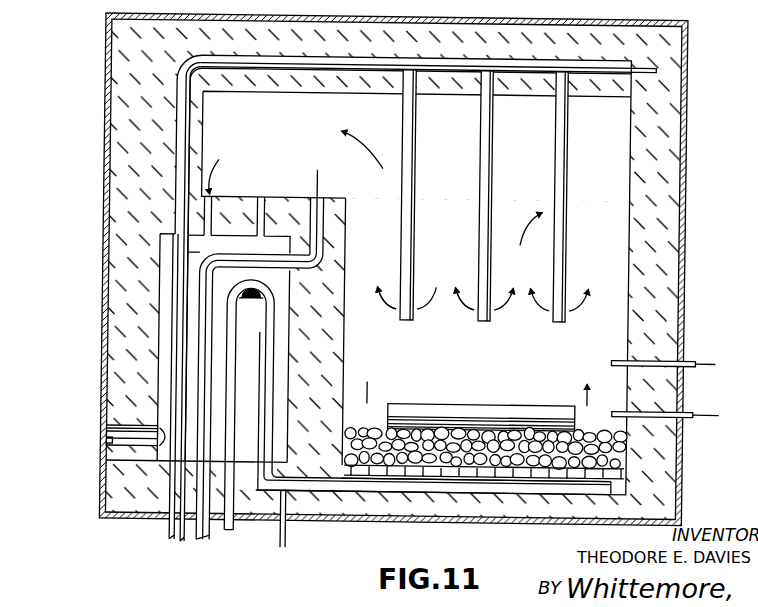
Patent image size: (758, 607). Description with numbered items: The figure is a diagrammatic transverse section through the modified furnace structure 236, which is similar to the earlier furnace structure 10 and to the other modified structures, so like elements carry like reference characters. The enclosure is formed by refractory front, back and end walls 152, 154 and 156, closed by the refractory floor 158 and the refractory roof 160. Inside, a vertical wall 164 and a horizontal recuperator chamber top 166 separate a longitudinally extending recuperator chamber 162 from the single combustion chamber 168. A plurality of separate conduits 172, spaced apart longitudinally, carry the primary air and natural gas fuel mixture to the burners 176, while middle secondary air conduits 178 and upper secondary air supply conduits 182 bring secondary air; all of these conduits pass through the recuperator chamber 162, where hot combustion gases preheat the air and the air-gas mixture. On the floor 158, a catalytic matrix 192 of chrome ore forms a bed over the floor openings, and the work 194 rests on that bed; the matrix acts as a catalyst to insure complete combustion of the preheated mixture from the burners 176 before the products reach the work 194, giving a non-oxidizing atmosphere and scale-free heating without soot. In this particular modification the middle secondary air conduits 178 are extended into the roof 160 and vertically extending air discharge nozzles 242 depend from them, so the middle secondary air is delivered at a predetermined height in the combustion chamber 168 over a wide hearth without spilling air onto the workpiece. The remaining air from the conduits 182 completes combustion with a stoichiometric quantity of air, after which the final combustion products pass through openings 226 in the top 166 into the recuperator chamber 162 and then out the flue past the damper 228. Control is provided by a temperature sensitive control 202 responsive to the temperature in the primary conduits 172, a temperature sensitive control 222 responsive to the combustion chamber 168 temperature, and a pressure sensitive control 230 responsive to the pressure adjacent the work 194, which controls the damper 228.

The furnace structure 10 is at (393, 263).
The refractory front wall 152 is at (678, 251).
The refractory back wall 154 is at (109, 104).
The refractory end wall 156 is at (291, 122).
The refractory floor 158 is at (369, 512).
The refractory roof 160 is at (506, 20).
The recuperator chamber 162 is at (220, 253).
The vertical wall 164 is at (346, 321).
The recuperator chamber top 166 is at (230, 193).
The single combustion chamber 168 is at (456, 190).
The conduits 172 is at (278, 371).
The burners 176 is at (527, 484).
The middle secondary air conduits 178 is at (180, 384).
The upper secondary air supply conduits 182 is at (201, 322).
The catalytic matrix 192 is at (633, 452).
The work 194 is at (437, 400).
The temperature sensitive control 202 is at (299, 532).
The temperature sensitive control 222 is at (690, 351).
The openings 226 is at (263, 193).
The damper 228 is at (106, 437).
The pressure sensitive control 230 is at (695, 405).
The modified furnace structure 236 is at (98, 239).
The vertically extending air discharge nozzles 242 is at (571, 196).